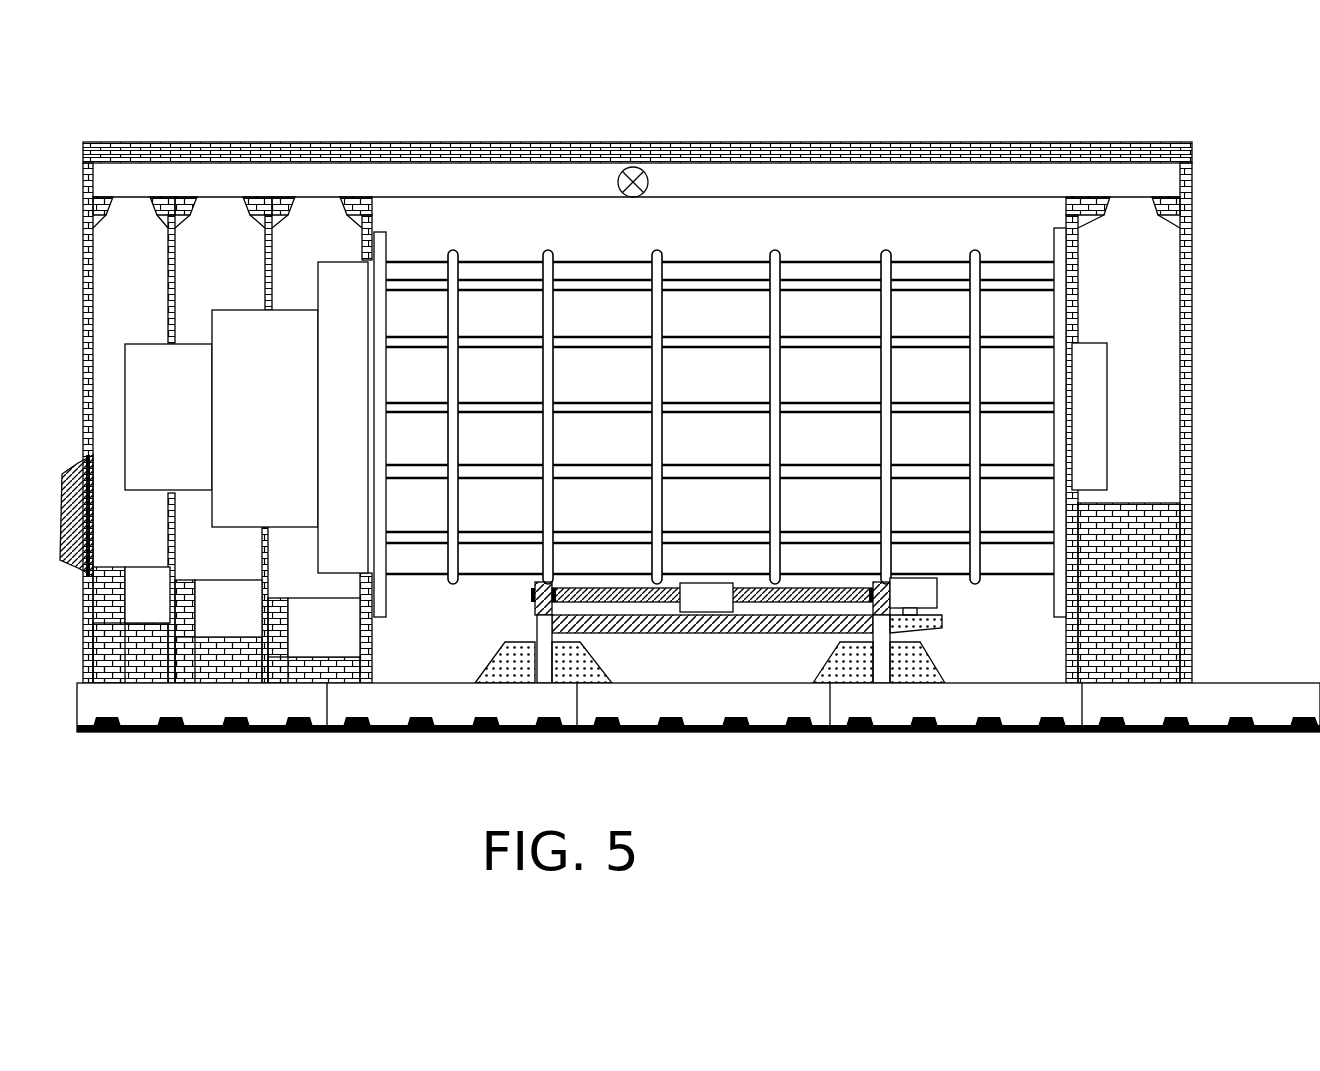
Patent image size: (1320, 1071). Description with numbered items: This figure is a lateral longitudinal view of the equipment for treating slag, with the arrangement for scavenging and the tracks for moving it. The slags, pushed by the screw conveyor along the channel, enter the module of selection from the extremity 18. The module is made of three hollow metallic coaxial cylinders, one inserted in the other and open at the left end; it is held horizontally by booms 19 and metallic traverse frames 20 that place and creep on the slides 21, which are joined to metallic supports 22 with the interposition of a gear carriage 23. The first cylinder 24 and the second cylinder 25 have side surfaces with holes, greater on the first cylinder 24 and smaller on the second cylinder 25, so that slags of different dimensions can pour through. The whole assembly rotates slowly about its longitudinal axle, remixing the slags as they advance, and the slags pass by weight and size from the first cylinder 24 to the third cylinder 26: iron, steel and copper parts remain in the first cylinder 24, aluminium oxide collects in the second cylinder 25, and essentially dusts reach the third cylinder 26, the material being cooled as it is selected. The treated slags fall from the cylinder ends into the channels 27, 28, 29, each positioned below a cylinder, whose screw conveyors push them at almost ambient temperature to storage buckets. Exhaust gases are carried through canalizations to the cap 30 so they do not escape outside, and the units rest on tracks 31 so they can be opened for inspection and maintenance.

The extremity 18 is at (1092, 395).
The booms 19 is at (496, 285).
The metallic traverse frames 20 is at (776, 252).
The slides 21 is at (880, 652).
The metallic supports 22 is at (498, 667).
The gear carriage 23 is at (535, 606).
The first cylinder 24 is at (146, 370).
The second cylinder 25 is at (242, 333).
The third cylinder 26 is at (333, 293).
The channel 27 is at (128, 590).
The channel 28 is at (222, 600).
The channel 29 is at (317, 617).
The cap 30 is at (482, 181).
The tracks 31 is at (272, 713).